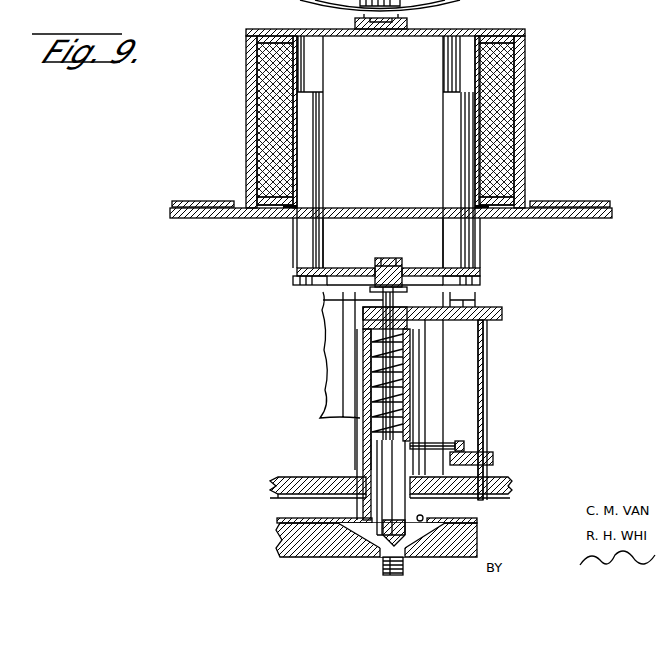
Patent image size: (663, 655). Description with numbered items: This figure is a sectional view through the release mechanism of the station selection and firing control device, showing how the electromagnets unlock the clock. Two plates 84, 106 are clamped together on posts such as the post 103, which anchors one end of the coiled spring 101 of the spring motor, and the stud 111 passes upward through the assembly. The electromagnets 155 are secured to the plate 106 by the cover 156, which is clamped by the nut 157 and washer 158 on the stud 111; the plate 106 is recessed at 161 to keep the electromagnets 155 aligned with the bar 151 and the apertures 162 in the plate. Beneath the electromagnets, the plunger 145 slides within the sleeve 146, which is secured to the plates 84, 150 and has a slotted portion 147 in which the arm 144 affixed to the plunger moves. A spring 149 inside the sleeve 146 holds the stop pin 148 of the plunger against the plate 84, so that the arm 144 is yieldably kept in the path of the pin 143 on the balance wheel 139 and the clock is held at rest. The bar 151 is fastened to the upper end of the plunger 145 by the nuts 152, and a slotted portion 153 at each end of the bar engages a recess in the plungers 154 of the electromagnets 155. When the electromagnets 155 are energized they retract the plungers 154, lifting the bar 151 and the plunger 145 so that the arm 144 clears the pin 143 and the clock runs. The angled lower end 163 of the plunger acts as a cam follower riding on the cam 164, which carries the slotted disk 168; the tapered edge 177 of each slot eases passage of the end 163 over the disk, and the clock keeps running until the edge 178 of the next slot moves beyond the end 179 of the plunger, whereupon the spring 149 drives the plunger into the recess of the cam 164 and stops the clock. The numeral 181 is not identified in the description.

The plate 84 is at (285, 477).
The coiled spring 101 is at (322, 413).
The post 103 is at (357, 442).
The plate 106 is at (612, 208).
The stud 111 is at (403, 572).
The balance wheel 139 is at (464, 445).
The pin 143 is at (440, 444).
The arm 144 is at (432, 425).
The plunger 145 is at (340, 300).
The sleeve 146 is at (363, 374).
The slotted portion 147 is at (410, 410).
The stop pin 148 is at (493, 462).
The spring 149 is at (372, 345).
The plate 150 is at (502, 313).
The bar 151 is at (405, 268).
The nuts 152 is at (407, 290).
The slotted portion 153 is at (293, 280).
The plungers 154 is at (300, 248).
The electromagnets 155 is at (258, 110).
The cover 156 is at (522, 29).
The nut 157 is at (410, 22).
The washer 158 is at (355, 22).
The recessed portion 161 is at (245, 201).
The apertures 162 is at (290, 218).
The angled lower end 163 is at (378, 495).
The cam 164 is at (280, 545).
The slotted disk 168 is at (277, 520).
The tapered edge 177 is at (423, 517).
The edge 178 is at (345, 510).
The end 179 is at (375, 550).
The seat 181 is at (350, 530).